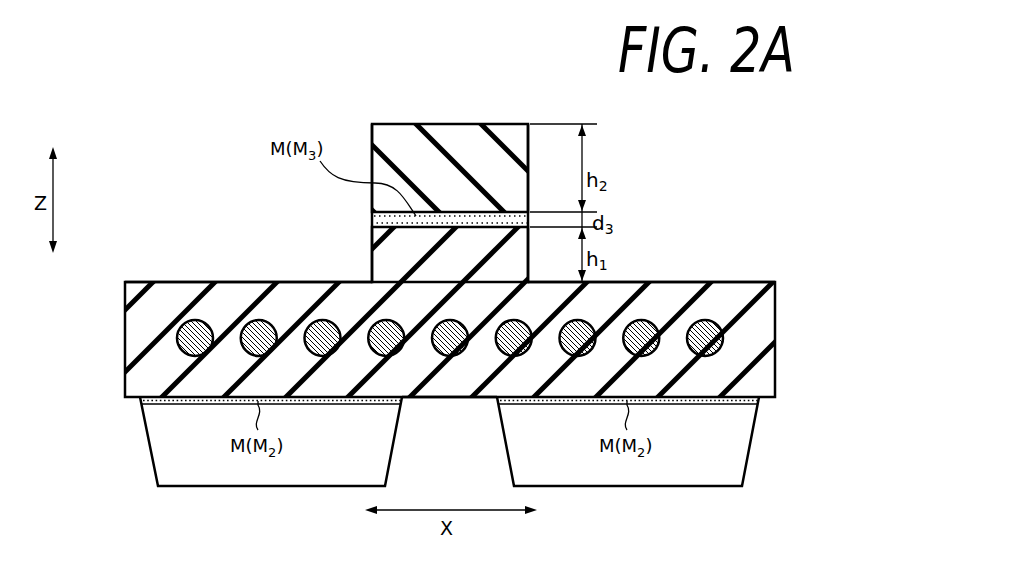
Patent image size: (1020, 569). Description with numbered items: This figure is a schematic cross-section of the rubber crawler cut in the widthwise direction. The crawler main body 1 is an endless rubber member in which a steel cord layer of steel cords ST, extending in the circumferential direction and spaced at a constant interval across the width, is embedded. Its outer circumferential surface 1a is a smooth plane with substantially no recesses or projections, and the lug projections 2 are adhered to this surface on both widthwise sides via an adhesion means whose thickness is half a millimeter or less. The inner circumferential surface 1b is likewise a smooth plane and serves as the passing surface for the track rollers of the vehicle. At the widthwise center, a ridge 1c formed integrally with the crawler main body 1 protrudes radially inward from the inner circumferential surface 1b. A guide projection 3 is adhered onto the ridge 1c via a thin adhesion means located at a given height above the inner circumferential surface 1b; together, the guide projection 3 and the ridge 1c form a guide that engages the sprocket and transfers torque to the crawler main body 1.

The crawler main body 1 is at (120, 327).
The outer circumferential surface 1a is at (450, 398).
The inner circumferential surface 1b is at (237, 282).
The ridge 1c is at (405, 255).
The lug projection 2 is at (262, 487).
The guide projection 3 is at (447, 134).
The steel cord ST is at (724, 318).